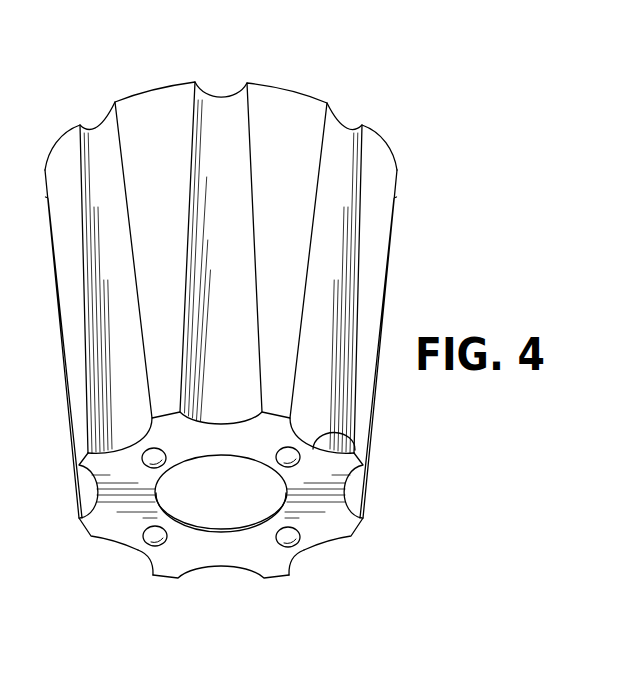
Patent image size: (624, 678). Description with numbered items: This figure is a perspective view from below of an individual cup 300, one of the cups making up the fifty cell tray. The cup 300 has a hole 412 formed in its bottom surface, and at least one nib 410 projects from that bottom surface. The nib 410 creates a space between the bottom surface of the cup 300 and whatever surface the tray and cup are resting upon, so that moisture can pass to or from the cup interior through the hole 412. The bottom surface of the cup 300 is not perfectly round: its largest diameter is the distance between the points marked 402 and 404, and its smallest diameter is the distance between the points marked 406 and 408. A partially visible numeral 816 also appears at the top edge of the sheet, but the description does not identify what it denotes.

The cup 300 is at (122, 74).
The largest diameter endpoint 402 is at (279, 405).
The largest diameter endpoint 404 is at (162, 578).
The smallest diameter endpoint 406 is at (357, 447).
The smallest diameter endpoint 408 is at (136, 549).
The nib 410 is at (305, 545).
The hole 412 is at (190, 522).
The reference numeral (cut off) 816 is at (264, 8).